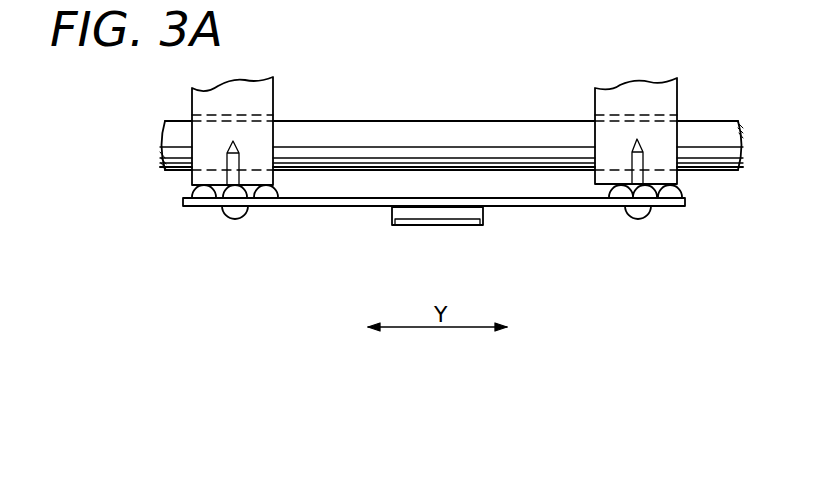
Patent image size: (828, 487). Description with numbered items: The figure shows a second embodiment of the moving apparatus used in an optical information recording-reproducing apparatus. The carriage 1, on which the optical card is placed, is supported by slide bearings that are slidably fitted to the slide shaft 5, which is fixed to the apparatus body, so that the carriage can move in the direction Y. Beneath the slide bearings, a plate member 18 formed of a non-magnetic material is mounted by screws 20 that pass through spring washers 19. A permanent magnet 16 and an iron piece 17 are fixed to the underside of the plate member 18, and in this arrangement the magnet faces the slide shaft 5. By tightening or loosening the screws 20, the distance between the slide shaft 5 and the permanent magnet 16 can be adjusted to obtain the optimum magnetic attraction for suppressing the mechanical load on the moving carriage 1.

The carriage 1 is at (258, 98).
The slide shaft 5 is at (178, 132).
The permanent magnet 16 is at (411, 213).
The support plate 17 is at (473, 222).
The plate member 18 is at (578, 202).
The spring washer 19 is at (192, 188).
The screw 20 is at (237, 214).